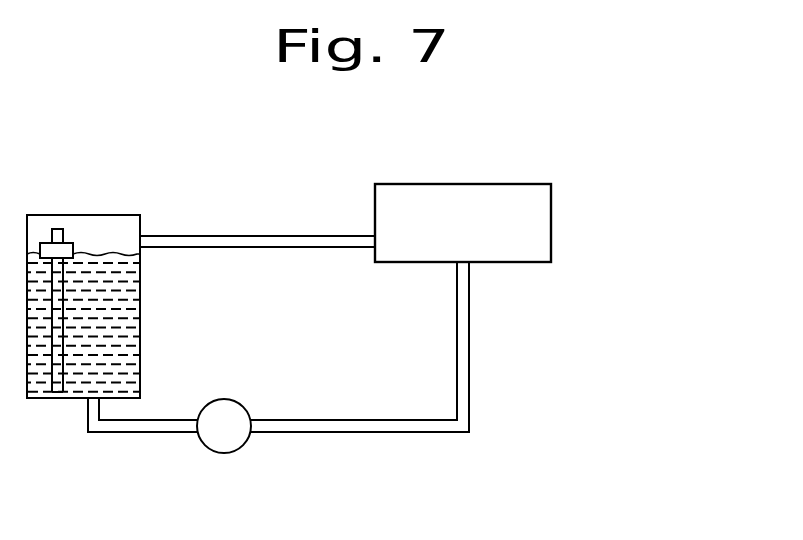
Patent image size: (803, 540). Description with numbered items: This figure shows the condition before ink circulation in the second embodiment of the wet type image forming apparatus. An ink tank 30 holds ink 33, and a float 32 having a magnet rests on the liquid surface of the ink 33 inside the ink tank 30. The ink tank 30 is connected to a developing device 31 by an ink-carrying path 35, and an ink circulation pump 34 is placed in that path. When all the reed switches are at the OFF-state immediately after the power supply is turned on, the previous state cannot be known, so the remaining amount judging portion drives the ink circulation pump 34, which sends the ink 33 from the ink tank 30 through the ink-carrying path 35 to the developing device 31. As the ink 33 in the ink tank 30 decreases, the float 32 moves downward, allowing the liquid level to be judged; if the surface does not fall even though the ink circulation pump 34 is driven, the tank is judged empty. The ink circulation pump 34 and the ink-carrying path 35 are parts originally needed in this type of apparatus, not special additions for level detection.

The ink tank 30 is at (123, 215).
The developing device 31 is at (463, 184).
The float having a magnet 32 is at (43, 243).
The ink 33 is at (128, 322).
The ink circulation pump 34 is at (198, 440).
The ink-carrying path 35 is at (469, 372).